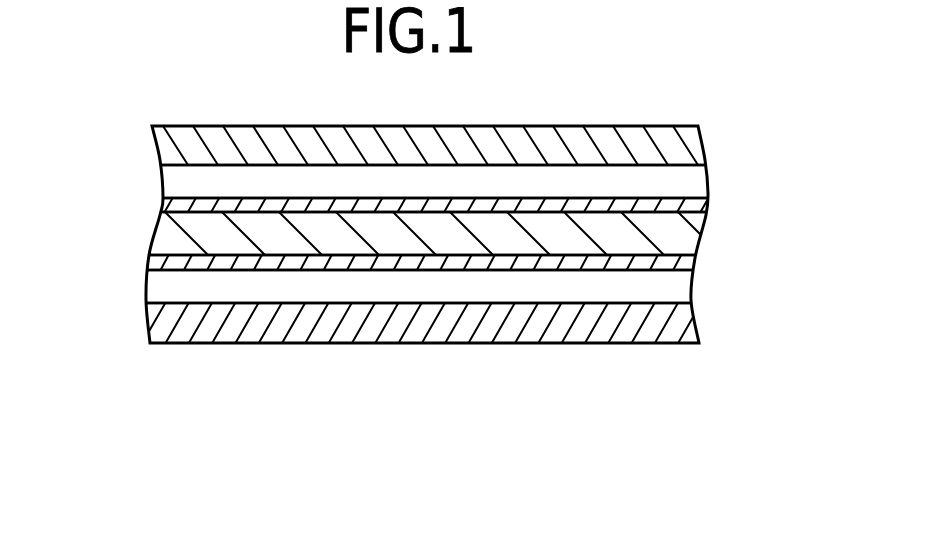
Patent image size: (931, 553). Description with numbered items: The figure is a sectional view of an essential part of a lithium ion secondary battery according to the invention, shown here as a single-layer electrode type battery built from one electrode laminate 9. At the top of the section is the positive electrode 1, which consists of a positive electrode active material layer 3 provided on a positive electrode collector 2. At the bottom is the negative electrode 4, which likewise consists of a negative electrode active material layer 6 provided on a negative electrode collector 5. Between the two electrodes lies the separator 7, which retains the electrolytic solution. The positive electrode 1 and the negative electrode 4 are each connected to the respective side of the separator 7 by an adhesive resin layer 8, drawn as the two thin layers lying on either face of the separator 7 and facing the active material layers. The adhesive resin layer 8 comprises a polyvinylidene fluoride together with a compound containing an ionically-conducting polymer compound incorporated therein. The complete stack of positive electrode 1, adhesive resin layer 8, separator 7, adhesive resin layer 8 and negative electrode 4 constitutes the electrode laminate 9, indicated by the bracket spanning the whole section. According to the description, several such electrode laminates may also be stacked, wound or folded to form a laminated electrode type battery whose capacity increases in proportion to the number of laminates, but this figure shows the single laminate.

The positive electrode 1 is at (749, 123).
The positive electrode collector 2 is at (698, 142).
The positive electrode active material layer 3 is at (700, 183).
The negative electrode 4 is at (740, 270).
The negative electrode collector 5 is at (690, 334).
The negative electrode active material layer 6 is at (685, 289).
The separator 7 is at (694, 234).
The adhesive resin layer 8 is at (705, 207).
The electrode laminate 9 is at (128, 127).